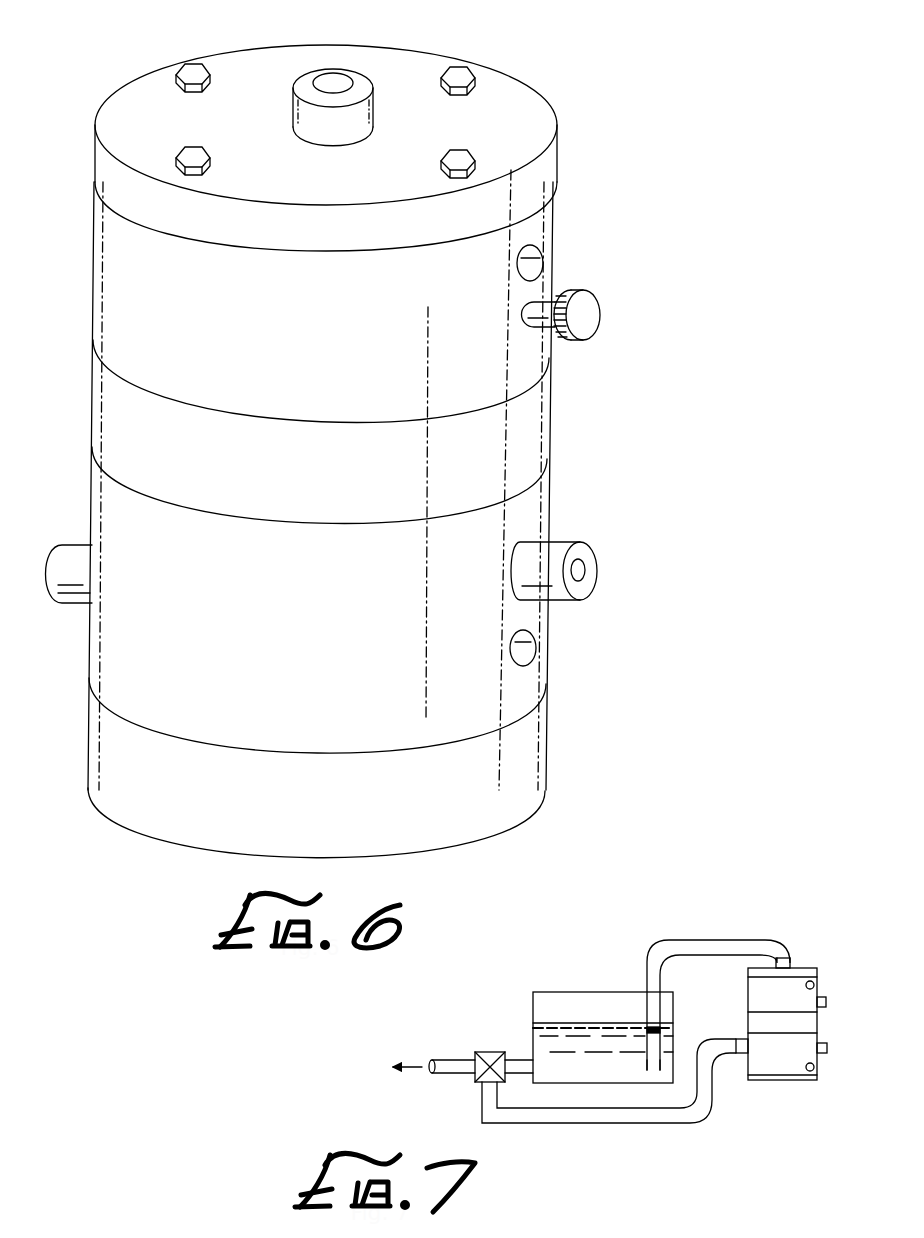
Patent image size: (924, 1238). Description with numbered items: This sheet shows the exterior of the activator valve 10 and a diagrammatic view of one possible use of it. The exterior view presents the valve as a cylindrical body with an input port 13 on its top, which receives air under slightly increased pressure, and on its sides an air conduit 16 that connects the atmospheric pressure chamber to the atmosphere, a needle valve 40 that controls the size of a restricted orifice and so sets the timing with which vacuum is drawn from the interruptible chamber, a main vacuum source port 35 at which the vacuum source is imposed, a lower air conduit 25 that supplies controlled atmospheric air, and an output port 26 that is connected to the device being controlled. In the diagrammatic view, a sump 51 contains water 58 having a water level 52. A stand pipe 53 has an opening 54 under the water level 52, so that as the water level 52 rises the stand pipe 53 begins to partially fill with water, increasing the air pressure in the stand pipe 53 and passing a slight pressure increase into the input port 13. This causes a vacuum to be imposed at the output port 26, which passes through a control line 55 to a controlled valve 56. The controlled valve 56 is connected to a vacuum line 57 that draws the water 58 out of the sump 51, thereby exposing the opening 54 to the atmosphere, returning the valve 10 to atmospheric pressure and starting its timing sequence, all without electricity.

In FIG. 6, the activator valve 10 is at (44, 302).
In FIG. 7, the activator valve 10 is at (843, 939).
In FIG. 6, the input port 13 is at (333, 90).
In FIG. 7, the input port 13 is at (801, 957).
In FIG. 6, the air conduit 16 is at (531, 264).
In FIG. 7, the air conduit 16 is at (813, 984).
In FIG. 6, the needle valve 40 is at (583, 312).
In FIG. 7, the needle valve 40 is at (827, 1003).
In FIG. 6, the output port 26 is at (76, 560).
In FIG. 7, the output port 26 is at (741, 1058).
In FIG. 6, the main vacuum source port 35 is at (578, 590).
In FIG. 7, the main vacuum source port 35 is at (828, 1048).
In FIG. 6, the lower air conduit 25 is at (525, 650).
In FIG. 7, the lower air conduit 25 is at (814, 1069).
In FIG. 7, the sump 51 is at (533, 1013).
In FIG. 7, the water level 52 is at (569, 1023).
In FIG. 7, the stand pipe 53 is at (645, 1008).
In FIG. 7, the opening 54 is at (653, 1068).
In FIG. 7, the control line 55 is at (665, 1125).
In FIG. 7, the controlled valve 56 is at (475, 1079).
In FIG. 7, the vacuum line 57 is at (455, 1058).
In FIG. 7, the water 58 is at (575, 1068).